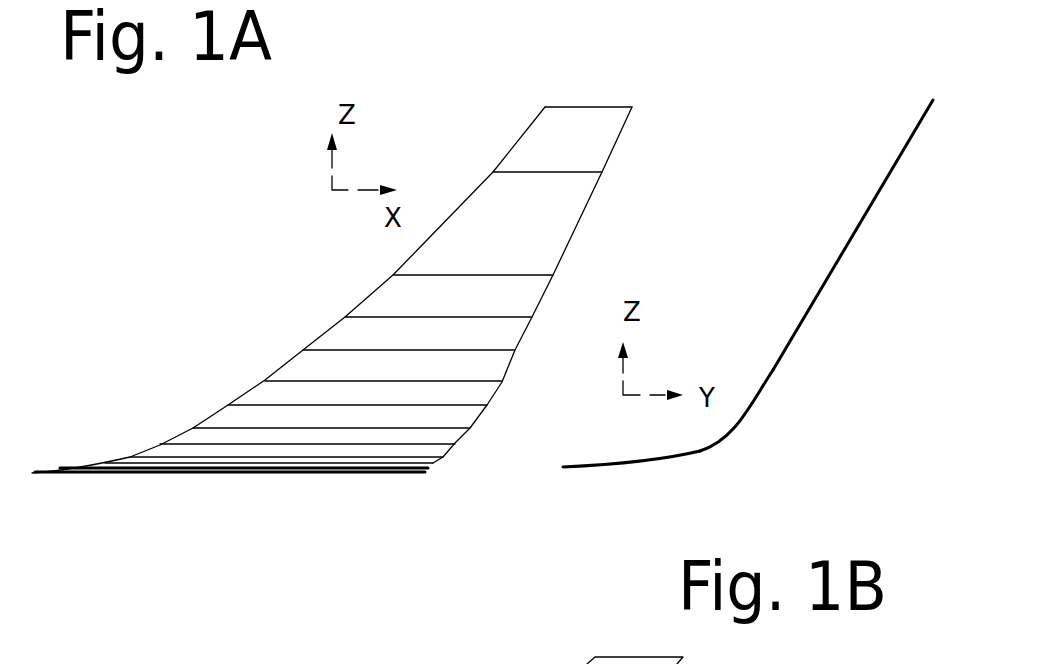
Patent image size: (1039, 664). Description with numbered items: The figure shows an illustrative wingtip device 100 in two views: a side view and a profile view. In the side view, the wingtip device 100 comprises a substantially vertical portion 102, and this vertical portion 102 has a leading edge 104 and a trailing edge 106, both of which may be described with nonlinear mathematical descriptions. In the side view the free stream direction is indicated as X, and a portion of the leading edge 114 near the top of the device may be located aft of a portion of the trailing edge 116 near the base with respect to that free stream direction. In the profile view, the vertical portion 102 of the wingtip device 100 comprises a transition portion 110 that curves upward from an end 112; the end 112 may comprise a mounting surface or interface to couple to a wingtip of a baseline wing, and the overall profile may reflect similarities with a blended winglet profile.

In FIG. 1A, the wingtip device 100 is at (303, 193).
In FIG. 1B, the wingtip device 100 is at (787, 441).
In FIG. 1A, the substantially vertical portion 102 is at (348, 340).
In FIG. 1B, the substantially vertical portion 102 is at (817, 295).
In FIG. 1A, the leading edge 104 is at (228, 405).
In FIG. 1A, the trailing edge 106 is at (610, 150).
In FIG. 1B, the transition portion 110 is at (713, 448).
In FIG. 1B, the end 112 is at (564, 468).
In FIG. 1A, the portion of the leading edge 114 is at (540, 113).
In FIG. 1B, the portion of the leading edge 114 is at (537, 663).
In FIG. 1A, the portion of the trailing edge 116 is at (433, 463).